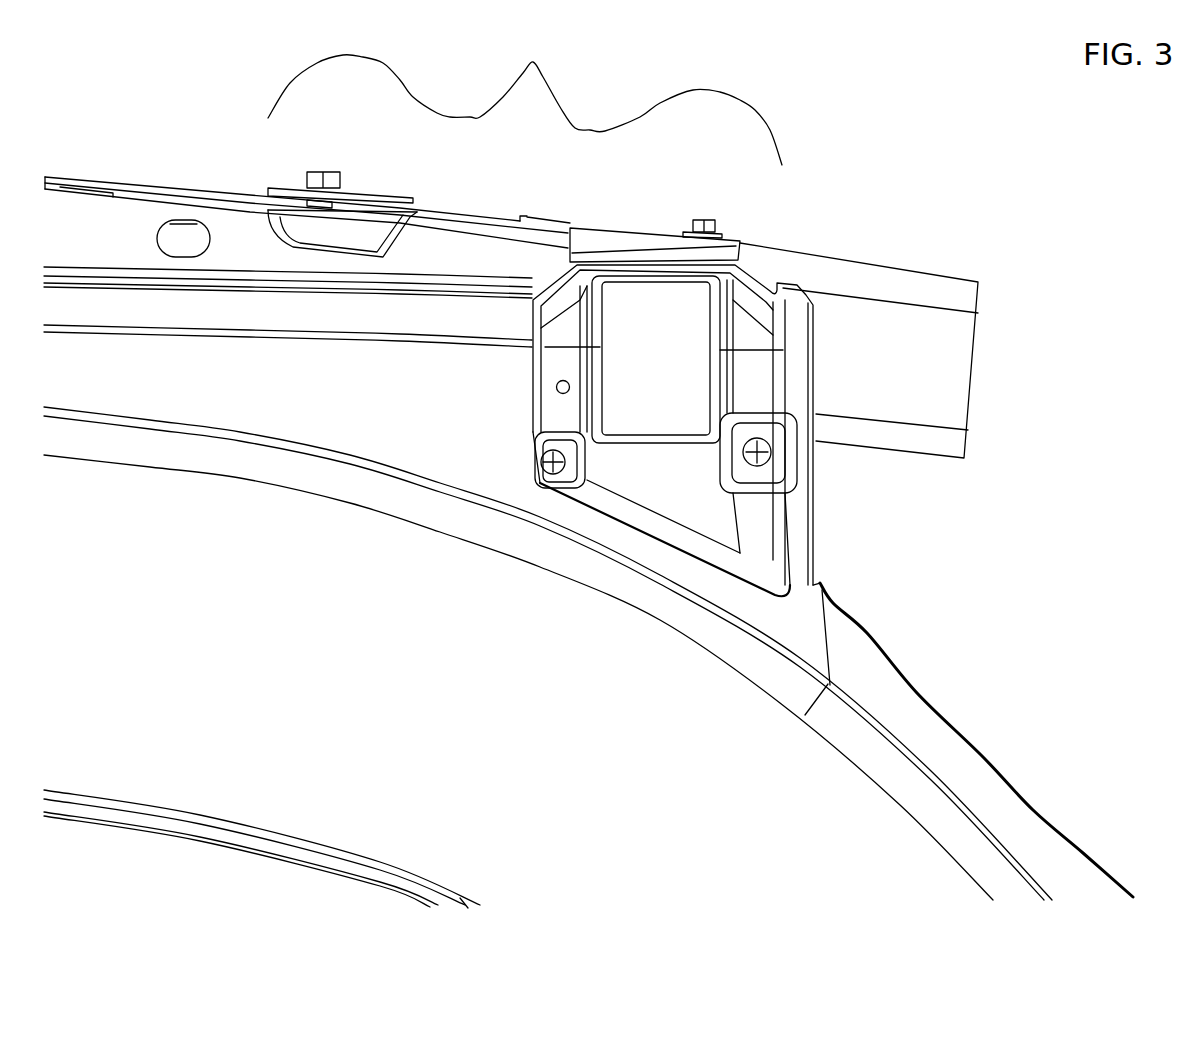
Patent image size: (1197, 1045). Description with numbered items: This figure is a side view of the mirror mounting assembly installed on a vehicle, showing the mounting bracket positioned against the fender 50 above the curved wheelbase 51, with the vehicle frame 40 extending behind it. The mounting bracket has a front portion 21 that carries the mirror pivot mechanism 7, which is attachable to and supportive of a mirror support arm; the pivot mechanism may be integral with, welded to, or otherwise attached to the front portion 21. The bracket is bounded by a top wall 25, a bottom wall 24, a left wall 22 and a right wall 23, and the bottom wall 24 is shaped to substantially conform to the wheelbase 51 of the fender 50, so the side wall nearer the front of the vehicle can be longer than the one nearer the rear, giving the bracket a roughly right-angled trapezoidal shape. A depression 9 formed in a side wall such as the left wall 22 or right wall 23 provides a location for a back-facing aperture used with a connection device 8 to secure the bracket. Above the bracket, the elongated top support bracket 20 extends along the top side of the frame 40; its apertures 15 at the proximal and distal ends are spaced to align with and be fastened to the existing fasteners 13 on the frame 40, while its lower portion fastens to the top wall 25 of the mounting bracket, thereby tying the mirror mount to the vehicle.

The mirror pivot mechanism 7 is at (632, 327).
The connection device 8 is at (543, 467).
The depression 9 is at (532, 441).
The existing fasteners 13 is at (322, 171).
The apertures 15 is at (297, 215).
The top support bracket 20 is at (533, 62).
The front portion 21 is at (652, 472).
The left wall 22 is at (534, 377).
The right wall 23 is at (787, 369).
The bottom wall 24 is at (655, 527).
The top wall 25 is at (645, 252).
The frame 40 is at (857, 283).
The fender 50 is at (292, 392).
The wheelbase 51 is at (313, 577).